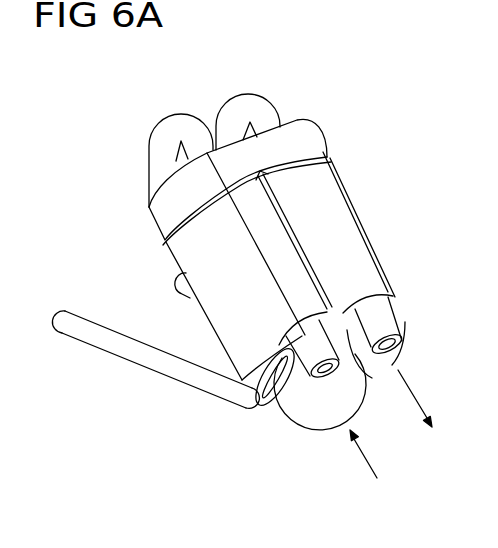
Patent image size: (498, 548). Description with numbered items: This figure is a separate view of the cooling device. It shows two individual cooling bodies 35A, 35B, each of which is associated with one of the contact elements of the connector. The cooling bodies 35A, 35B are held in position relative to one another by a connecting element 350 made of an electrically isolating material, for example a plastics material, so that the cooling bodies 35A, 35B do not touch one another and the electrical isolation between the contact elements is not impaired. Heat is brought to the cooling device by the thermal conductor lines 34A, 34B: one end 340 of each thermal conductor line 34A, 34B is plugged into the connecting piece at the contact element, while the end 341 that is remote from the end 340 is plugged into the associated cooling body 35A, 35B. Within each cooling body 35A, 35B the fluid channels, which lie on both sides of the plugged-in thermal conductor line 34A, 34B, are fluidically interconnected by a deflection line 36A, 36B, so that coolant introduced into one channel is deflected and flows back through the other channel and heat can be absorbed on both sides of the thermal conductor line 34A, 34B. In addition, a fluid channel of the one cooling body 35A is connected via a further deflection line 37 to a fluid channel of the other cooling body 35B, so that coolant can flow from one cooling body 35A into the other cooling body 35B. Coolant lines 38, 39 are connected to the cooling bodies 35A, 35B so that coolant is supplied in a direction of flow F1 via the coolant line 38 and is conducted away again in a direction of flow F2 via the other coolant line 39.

The connecting element 350 is at (307, 137).
The deflection line 36A is at (157, 147).
The deflection line 36B is at (242, 107).
The cooling body 35A is at (195, 248).
The cooling body 35B is at (340, 230).
The end of the thermal conductor line 341 is at (395, 305).
The coolant line 38 is at (324, 376).
The coolant line 39 is at (403, 342).
The deflection line 37 is at (297, 413).
The thermal conductor line 34A is at (155, 358).
The end of the thermal conductor line 340 is at (70, 327).
The thermal conductor line 34B is at (187, 293).
The direction of flow F1 is at (370, 471).
The direction of flow F2 is at (425, 416).